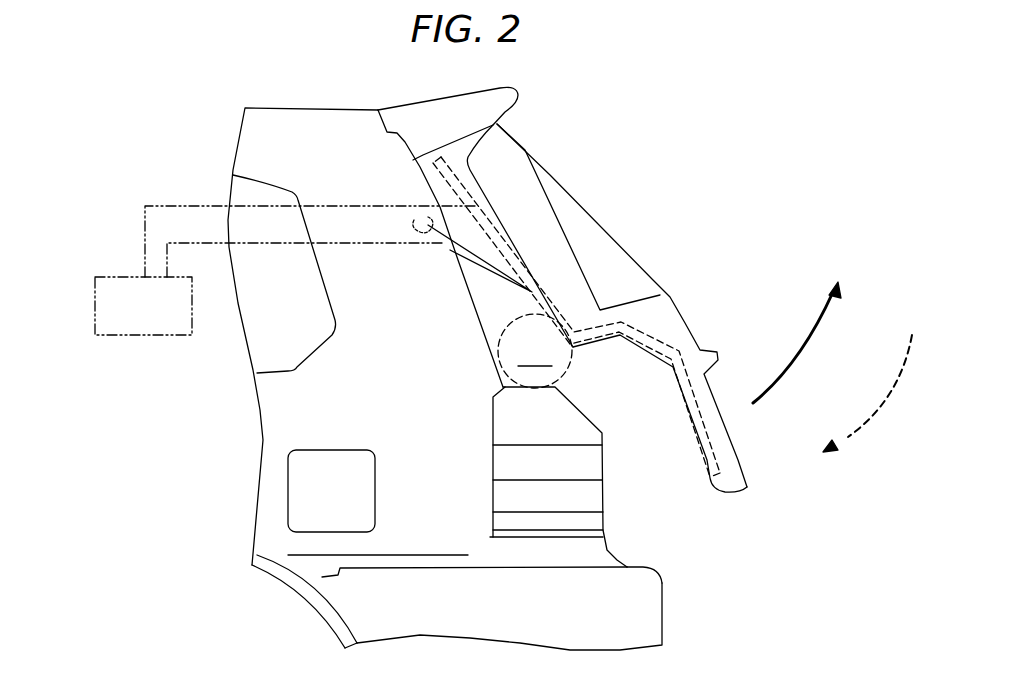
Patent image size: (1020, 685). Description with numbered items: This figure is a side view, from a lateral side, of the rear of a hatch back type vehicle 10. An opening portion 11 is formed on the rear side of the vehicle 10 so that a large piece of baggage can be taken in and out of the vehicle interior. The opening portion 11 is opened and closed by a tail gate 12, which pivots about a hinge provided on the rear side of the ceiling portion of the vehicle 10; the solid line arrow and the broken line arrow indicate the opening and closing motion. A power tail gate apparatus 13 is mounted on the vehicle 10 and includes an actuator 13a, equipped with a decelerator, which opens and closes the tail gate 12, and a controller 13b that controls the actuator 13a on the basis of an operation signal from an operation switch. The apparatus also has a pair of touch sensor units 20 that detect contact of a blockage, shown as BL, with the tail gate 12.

The vehicle 10 is at (232, 137).
The opening portion 11 is at (666, 503).
The tail gate 12 is at (660, 327).
The power tail gate apparatus 13 is at (138, 228).
The actuator 13a is at (488, 264).
The controller 13b is at (118, 337).
The touch sensor unit 20 is at (495, 213).